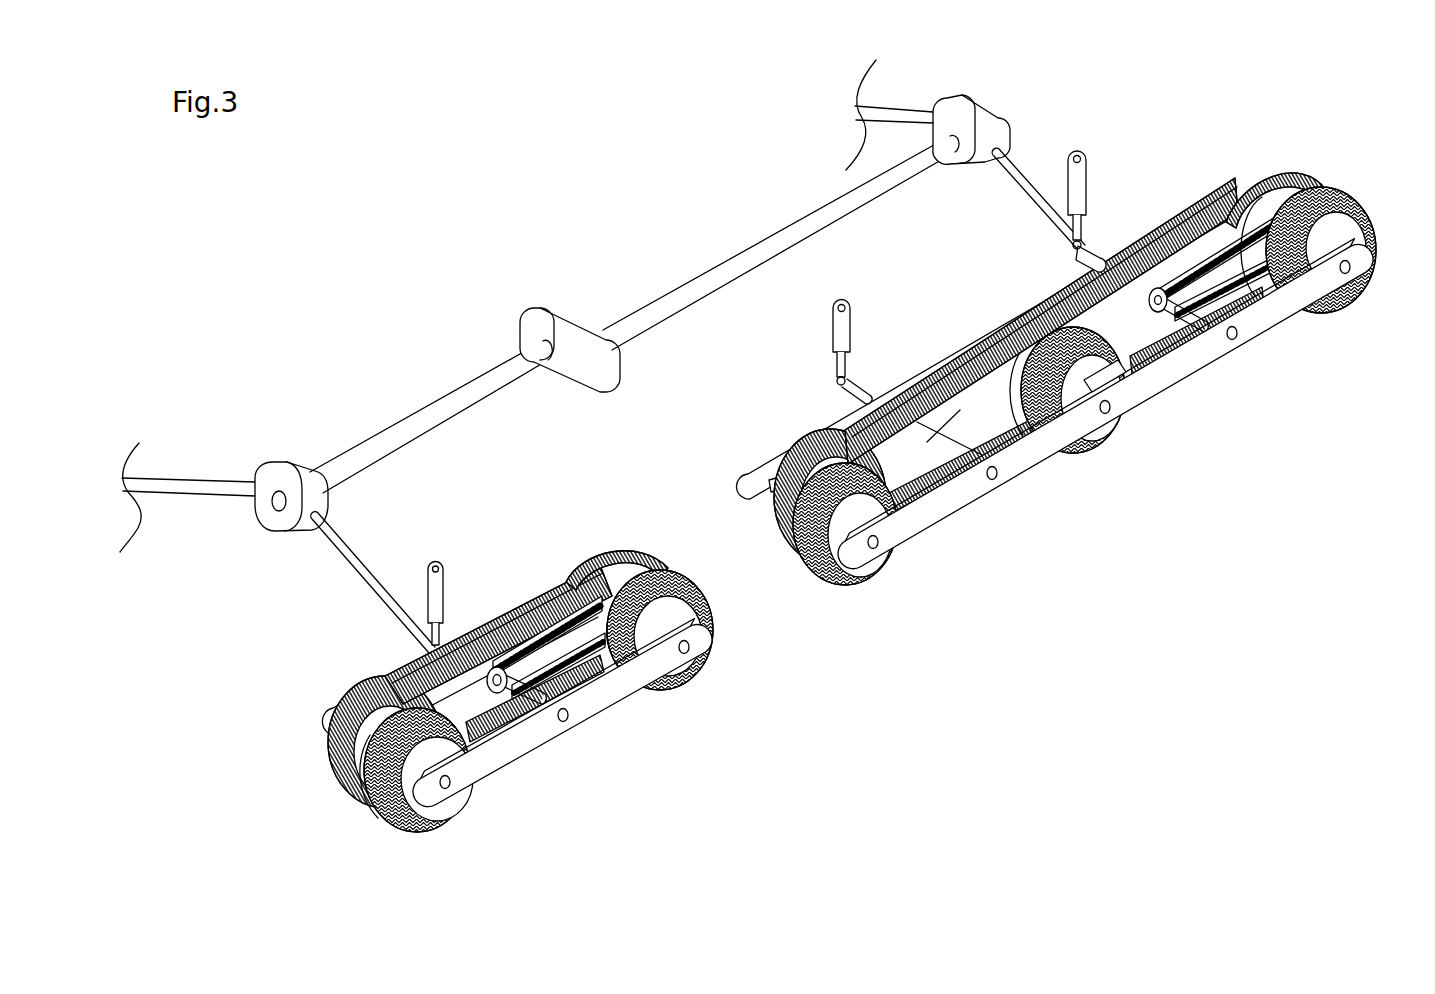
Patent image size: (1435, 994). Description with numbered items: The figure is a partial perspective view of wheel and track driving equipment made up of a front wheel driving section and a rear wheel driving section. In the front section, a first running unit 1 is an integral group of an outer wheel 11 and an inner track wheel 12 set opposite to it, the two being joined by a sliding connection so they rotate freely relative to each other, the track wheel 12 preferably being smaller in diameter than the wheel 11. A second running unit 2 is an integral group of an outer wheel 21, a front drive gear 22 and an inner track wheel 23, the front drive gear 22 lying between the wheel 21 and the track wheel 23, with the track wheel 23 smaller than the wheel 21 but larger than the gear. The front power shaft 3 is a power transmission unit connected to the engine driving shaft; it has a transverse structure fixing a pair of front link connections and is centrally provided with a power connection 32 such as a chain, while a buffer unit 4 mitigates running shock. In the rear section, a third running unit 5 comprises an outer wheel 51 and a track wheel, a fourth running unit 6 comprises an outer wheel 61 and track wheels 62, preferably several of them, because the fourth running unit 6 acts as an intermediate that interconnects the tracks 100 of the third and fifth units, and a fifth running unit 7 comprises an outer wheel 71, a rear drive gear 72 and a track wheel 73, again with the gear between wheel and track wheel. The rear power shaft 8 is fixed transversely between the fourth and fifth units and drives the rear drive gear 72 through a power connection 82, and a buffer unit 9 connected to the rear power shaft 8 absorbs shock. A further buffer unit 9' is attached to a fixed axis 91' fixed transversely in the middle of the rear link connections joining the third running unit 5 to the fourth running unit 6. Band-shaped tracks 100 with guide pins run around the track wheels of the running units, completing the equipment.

The first running unit 1 is at (360, 799).
The wheel 11 is at (428, 812).
The track wheel 12 is at (357, 790).
The second running unit 2 is at (652, 611).
The wheel 21 is at (683, 672).
The front drive gear 22 is at (620, 636).
The track wheel 23 is at (601, 586).
The front power shaft 3 is at (536, 598).
The power connection 32 is at (485, 668).
The buffer unit 4 is at (428, 577).
The track 100 is at (1210, 207).
The third running unit 5 is at (853, 583).
The wheel 51 is at (863, 571).
The fourth running unit 6 is at (1026, 399).
The wheel 61 is at (1098, 412).
The track wheel 62 is at (1018, 402).
The fifth running unit 7 is at (1325, 296).
The wheel 71 is at (1326, 294).
The rear drive gear 72 is at (1310, 278).
The track wheel 73 is at (1262, 342).
The rear power shaft 8 is at (1062, 294).
The power connection 82 is at (1262, 340).
The buffer unit 9 is at (1066, 176).
The buffer unit 9' is at (842, 322).
The fixed axis 91' is at (931, 383).